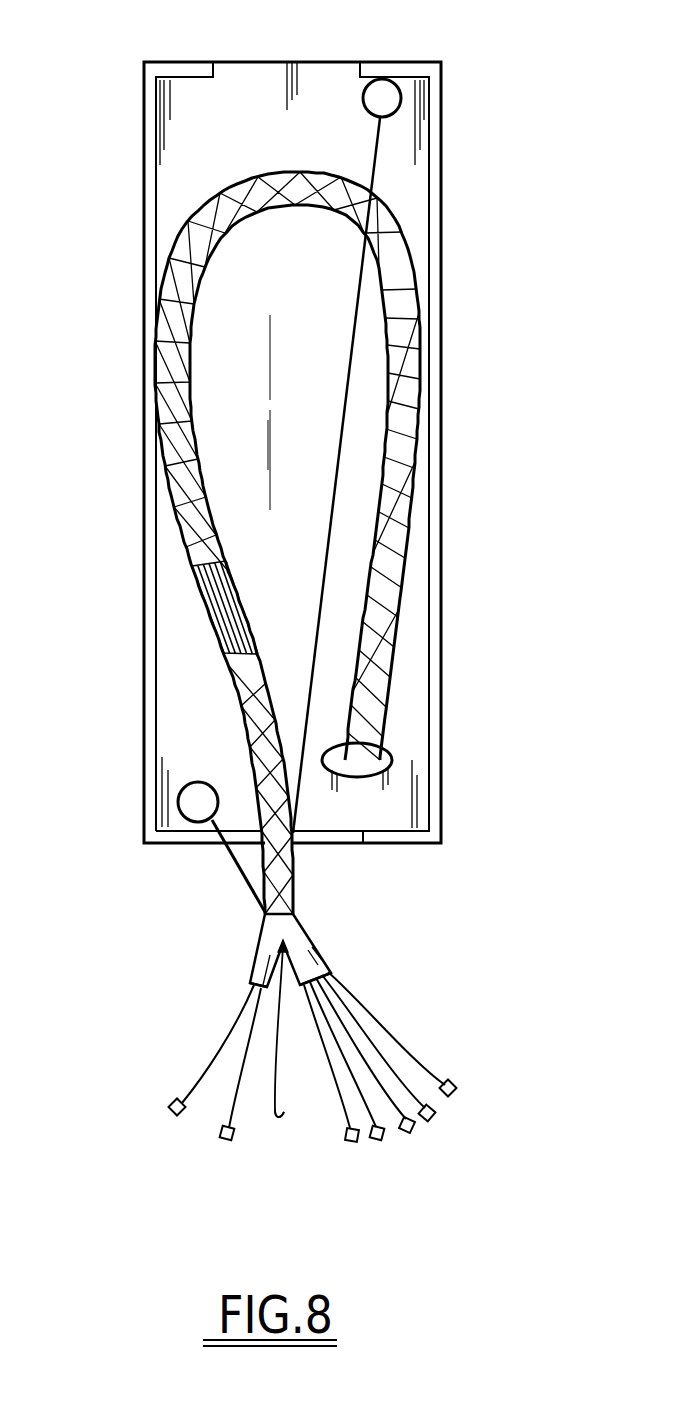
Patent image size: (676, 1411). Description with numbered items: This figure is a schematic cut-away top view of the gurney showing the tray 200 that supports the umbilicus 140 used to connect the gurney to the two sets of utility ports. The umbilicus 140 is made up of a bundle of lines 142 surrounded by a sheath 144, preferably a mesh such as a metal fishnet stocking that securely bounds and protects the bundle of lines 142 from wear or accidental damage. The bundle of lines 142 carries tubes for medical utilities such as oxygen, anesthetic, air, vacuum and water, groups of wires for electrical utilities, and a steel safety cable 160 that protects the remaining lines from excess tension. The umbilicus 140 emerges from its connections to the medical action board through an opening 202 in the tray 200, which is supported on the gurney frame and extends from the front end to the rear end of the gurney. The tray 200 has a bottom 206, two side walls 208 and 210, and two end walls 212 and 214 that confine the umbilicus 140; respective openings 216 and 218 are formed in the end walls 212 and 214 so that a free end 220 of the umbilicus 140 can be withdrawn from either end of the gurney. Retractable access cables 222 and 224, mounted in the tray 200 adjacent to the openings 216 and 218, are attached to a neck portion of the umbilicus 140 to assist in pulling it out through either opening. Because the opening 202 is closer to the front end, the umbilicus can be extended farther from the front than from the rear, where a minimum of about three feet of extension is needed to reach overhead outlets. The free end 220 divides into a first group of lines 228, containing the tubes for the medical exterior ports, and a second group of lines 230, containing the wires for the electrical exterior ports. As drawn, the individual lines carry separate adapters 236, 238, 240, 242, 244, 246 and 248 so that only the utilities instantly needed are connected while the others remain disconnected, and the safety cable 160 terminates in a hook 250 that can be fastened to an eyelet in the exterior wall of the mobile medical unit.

The tray 200 is at (143, 215).
The umbilicus 140 is at (248, 230).
The bundle of lines 142 is at (245, 616).
The sheath 144 is at (193, 443).
The steel safety cable 160 is at (276, 1052).
The opening 202 is at (328, 762).
The bottom 206 is at (340, 345).
The side wall 208 is at (160, 615).
The side wall 210 is at (425, 675).
The end wall 212 is at (396, 832).
The end wall 214 is at (190, 84).
The opening 216 is at (362, 842).
The opening 218 is at (352, 66).
The free end 220 is at (264, 933).
The retractable access cable 222 is at (235, 860).
The retractable access cable 224 is at (377, 148).
The first group of lines 228 is at (313, 958).
The second group of lines 230 is at (256, 957).
The adapter 236 is at (462, 1097).
The adapter 238 is at (437, 1120).
The adapter 240 is at (418, 1132).
The adapter 242 is at (383, 1150).
The adapter 244 is at (352, 1148).
The adapter 246 is at (222, 1140).
The adapter 248 is at (173, 1112).
The hook 250 is at (275, 1120).